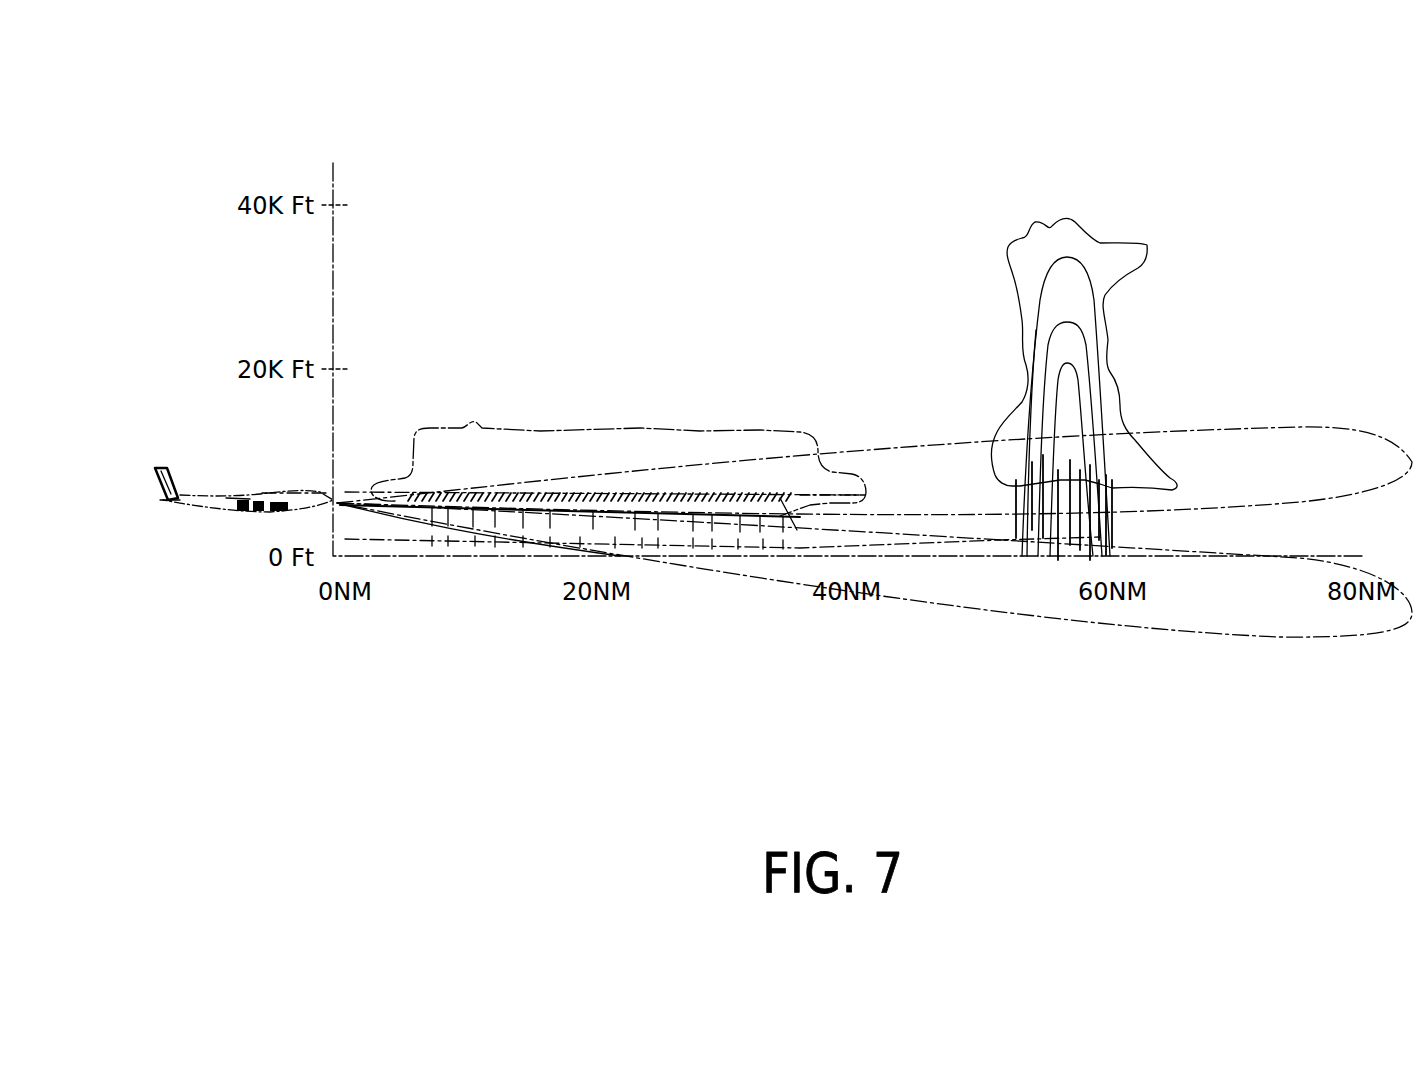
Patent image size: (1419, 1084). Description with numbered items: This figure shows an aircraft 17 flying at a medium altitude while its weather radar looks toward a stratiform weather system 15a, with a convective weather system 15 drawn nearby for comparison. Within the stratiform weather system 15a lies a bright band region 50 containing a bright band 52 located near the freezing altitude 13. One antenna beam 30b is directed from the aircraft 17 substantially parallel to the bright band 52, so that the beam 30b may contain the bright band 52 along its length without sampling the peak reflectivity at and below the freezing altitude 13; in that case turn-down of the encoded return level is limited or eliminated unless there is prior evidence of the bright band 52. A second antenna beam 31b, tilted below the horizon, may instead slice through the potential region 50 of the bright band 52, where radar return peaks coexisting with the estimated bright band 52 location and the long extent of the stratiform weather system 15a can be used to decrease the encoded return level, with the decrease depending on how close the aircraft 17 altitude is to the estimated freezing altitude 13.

The aircraft 17 is at (231, 497).
The stratiform weather system 15a is at (541, 432).
The convective weather system 15 is at (1057, 226).
The antenna beam 30b is at (1291, 428).
The antenna beam 31b is at (1283, 637).
The bright band region 50 is at (429, 515).
The bright band 52 is at (805, 505).
The freezing altitude 13 is at (875, 490).